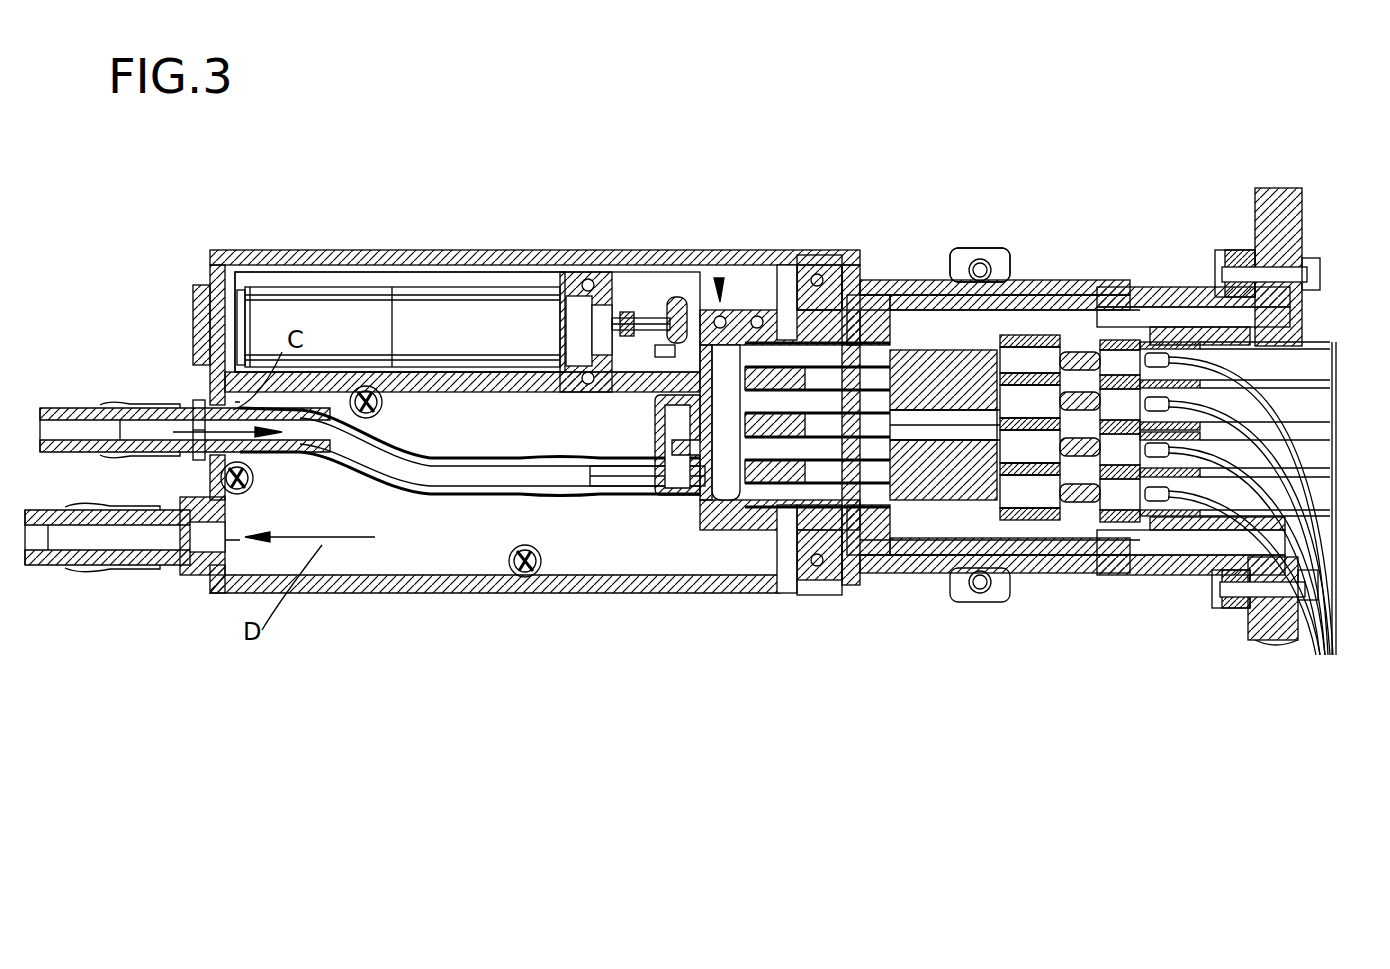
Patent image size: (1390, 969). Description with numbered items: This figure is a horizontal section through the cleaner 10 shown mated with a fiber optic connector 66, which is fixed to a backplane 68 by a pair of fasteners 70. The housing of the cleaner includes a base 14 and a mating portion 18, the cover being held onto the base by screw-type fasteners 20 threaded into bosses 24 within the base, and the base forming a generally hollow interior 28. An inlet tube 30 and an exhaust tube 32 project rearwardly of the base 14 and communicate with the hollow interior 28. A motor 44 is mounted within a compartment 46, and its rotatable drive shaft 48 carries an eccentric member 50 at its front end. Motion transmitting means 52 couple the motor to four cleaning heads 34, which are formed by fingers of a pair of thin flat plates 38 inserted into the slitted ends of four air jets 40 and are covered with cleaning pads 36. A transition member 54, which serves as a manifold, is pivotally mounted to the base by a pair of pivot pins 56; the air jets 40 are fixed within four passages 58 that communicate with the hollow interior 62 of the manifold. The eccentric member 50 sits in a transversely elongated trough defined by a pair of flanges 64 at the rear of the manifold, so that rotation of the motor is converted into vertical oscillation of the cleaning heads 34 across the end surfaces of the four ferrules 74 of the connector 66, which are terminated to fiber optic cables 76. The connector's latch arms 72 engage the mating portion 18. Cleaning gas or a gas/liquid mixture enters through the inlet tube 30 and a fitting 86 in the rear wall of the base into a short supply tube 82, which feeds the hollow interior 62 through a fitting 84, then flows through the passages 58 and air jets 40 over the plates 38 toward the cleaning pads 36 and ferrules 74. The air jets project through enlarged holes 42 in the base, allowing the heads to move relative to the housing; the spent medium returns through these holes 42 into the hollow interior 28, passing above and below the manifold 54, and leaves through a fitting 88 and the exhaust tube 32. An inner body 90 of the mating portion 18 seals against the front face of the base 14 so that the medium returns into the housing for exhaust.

The cleaner 10 is at (697, 127).
The base 14 is at (642, 570).
The mating portion 18 is at (920, 282).
The screw-type fasteners 20 is at (372, 410).
The bosses 24 is at (382, 402).
The hollow interior 28 is at (365, 575).
The inlet tube 30 is at (78, 406).
The exhaust tube 32 is at (38, 567).
The cleaning heads 34 is at (1025, 370).
The cleaning pads 36 is at (1095, 395).
The plates 38 is at (978, 262).
The air jets 40 is at (870, 352).
The enlarged holes 42 is at (818, 318).
The motor 44 is at (437, 300).
The compartment 46 is at (415, 380).
The drive shaft 48 is at (628, 268).
The eccentric member 50 is at (678, 295).
The motion transmitting means 52 is at (725, 300).
The transition member 54 is at (722, 515).
The pivot pins 56 is at (790, 265).
The passages 58 is at (745, 445).
The hollow interior 62 is at (655, 428).
The flanges 64 is at (700, 275).
The fiber optic connector 66 is at (1193, 283).
The backplane 68 is at (1270, 210).
The fasteners 70 is at (1300, 275).
The latch arms 72 is at (1040, 340).
The ferrules 74 is at (1150, 355).
The fiber optic cables 76 is at (1283, 560).
The supply tube 82 is at (460, 497).
The fitting 84 is at (660, 495).
The fitting 86 is at (197, 405).
The fitting 88 is at (200, 577).
The inner body 90 is at (880, 560).